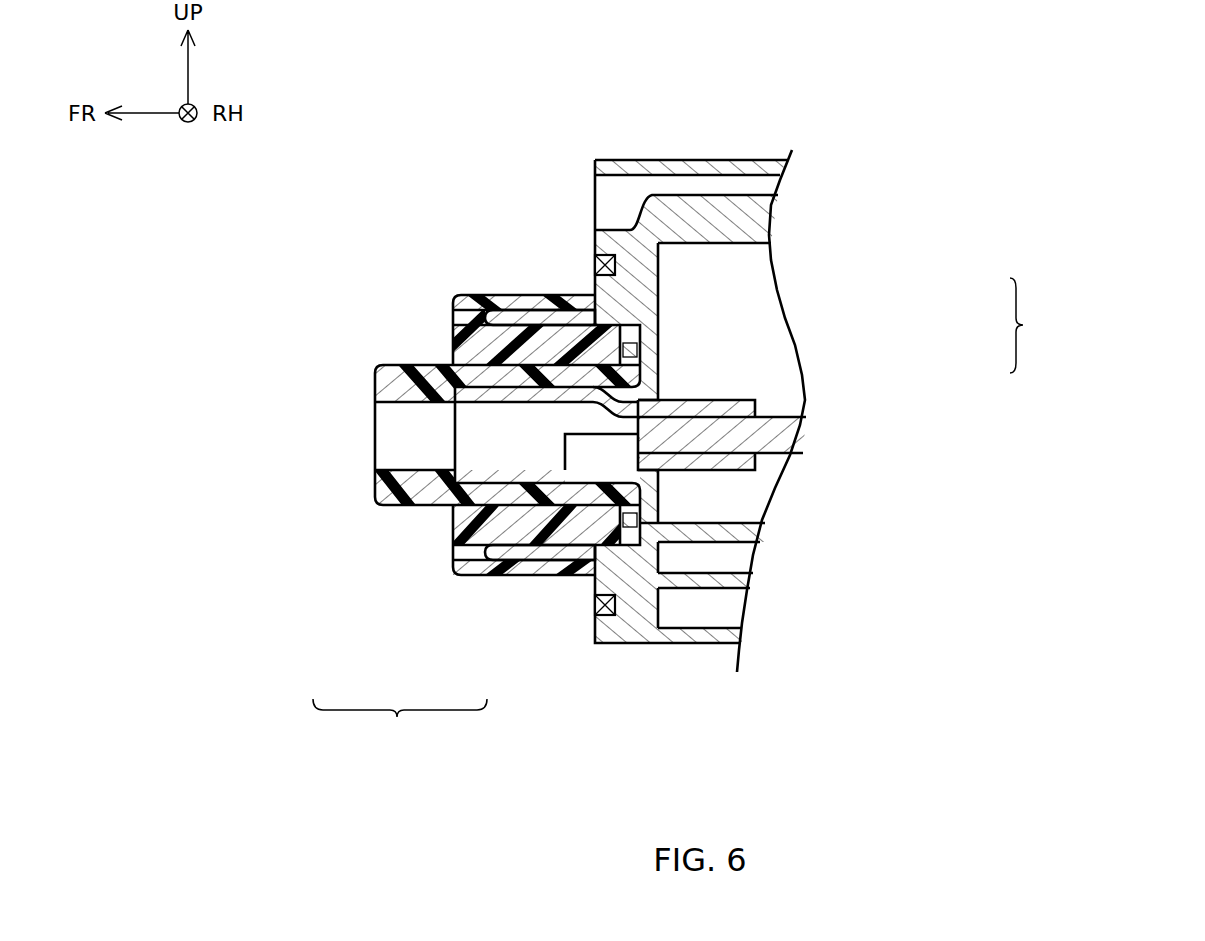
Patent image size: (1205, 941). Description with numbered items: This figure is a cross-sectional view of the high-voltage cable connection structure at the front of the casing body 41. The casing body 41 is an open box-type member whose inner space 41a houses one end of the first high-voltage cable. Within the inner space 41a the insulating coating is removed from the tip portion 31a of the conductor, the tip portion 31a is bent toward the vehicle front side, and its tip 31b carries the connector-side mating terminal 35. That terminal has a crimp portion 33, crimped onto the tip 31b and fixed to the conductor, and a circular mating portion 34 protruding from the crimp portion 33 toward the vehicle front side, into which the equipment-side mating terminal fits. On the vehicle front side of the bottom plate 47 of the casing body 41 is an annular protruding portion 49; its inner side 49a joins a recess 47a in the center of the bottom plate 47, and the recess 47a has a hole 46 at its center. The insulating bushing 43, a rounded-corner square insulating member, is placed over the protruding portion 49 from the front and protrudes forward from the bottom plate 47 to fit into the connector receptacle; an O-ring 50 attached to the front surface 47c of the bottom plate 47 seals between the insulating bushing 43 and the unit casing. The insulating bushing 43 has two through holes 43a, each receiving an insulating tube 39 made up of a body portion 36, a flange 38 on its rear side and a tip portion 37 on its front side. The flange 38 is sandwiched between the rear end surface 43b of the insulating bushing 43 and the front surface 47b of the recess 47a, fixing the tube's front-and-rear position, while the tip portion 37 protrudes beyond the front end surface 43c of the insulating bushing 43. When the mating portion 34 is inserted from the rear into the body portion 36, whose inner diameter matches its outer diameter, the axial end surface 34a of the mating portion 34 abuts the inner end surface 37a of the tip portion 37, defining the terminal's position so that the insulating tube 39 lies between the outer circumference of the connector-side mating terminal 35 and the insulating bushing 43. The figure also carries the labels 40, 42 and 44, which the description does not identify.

The tip portion 31a is at (787, 417).
The tip 31b is at (708, 440).
The crimp portion 33 is at (745, 396).
The mating portion 34 is at (655, 388).
The axial end surface 34a is at (413, 387).
The connector-side mating terminal 35 is at (1033, 325).
The body portion 36 is at (518, 503).
The tip portion 37 is at (395, 505).
The inner end surface 37a is at (460, 472).
The flange 38 is at (627, 547).
The insulating tube 39 is at (400, 721).
The vehicle body structure 40 is at (1083, 235).
The casing body 41 is at (743, 192).
The inner space 41a is at (742, 246).
The cover plate 42 is at (752, 160).
The insulating bushing 43 is at (505, 293).
The through holes 43a is at (438, 366).
The rear end surface 43b is at (640, 325).
The front end surface 43c is at (452, 317).
The body panel 44 is at (912, 171).
The hole 46 is at (650, 487).
The bottom plate 47 is at (657, 558).
The recess 47a is at (629, 300).
The front surface 47b is at (640, 355).
The front surface 47c is at (595, 245).
The annular protruding portion 49 is at (543, 320).
The inner side 49a is at (506, 332).
The O-ring 50 is at (593, 263).